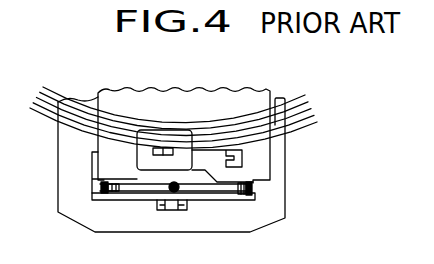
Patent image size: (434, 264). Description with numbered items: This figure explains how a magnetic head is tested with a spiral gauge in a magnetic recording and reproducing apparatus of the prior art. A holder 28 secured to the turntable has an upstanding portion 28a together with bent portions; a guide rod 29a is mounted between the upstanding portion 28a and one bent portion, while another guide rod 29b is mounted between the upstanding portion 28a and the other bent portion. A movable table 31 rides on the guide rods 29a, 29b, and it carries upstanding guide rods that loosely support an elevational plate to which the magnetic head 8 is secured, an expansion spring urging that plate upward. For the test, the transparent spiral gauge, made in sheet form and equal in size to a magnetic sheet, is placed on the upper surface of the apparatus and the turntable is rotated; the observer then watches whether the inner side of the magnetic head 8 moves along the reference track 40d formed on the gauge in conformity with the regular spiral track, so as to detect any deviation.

The magnetic head 8 is at (148, 166).
The holder 28 is at (68, 157).
The upstanding portion 28a is at (202, 199).
The guide rod 29a is at (96, 188).
The guide rod 29b is at (253, 188).
The movable table 31 is at (227, 100).
The reference track 40d is at (268, 136).